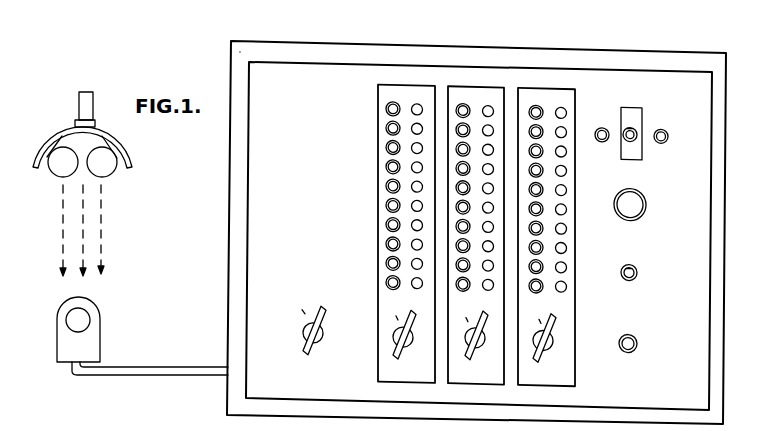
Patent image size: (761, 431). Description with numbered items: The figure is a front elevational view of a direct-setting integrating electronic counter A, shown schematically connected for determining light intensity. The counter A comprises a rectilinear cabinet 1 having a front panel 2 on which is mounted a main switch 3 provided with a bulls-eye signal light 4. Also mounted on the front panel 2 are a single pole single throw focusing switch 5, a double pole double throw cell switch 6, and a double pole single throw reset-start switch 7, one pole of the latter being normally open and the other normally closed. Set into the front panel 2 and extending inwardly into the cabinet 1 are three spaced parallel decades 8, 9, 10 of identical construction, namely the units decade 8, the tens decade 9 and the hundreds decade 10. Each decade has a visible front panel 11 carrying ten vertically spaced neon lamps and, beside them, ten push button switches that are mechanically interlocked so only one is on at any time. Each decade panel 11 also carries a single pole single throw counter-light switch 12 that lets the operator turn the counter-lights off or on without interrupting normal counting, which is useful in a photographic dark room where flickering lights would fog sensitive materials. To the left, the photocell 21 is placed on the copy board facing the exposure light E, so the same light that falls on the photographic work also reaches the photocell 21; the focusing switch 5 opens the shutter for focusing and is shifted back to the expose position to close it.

The direct-setting integrating electronic counter A is at (305, 40).
The exposure light E is at (47, 138).
The rectilinear cabinet 1 is at (230, 160).
The front panel 2 is at (262, 238).
The main switch 3 is at (647, 108).
The bulls-eye signal light 4 is at (644, 194).
The focusing switch 5 is at (638, 263).
The cell switch 6 is at (318, 340).
The reset-start switch 7 is at (639, 335).
The units decade 8 is at (516, 372).
The tens decade 9 is at (448, 372).
The hundreds decade 10 is at (380, 365).
The decade front panel 11 is at (378, 84).
The counter-light switch 12 is at (393, 329).
The photocell 21 is at (62, 339).